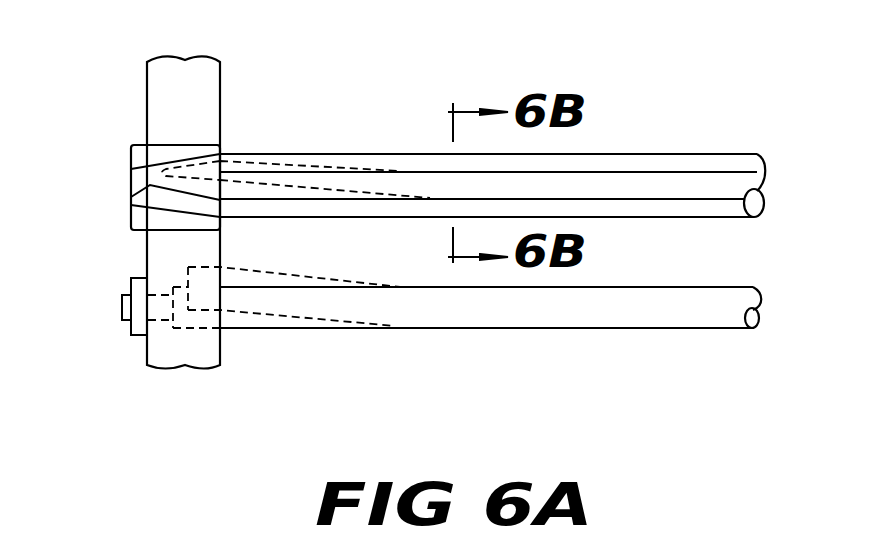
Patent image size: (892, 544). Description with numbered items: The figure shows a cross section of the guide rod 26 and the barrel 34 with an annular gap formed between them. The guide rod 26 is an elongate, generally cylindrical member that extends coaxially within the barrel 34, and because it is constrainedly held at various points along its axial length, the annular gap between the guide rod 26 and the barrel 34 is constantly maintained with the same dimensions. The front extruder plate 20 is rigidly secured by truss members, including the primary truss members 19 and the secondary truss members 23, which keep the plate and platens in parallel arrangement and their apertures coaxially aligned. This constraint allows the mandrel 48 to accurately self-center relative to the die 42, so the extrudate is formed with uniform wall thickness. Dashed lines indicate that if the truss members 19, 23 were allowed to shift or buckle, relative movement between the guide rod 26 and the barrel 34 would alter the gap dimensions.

The primary truss member 19 is at (318, 325).
The front extruder plate 20 is at (188, 78).
The secondary truss member 23 is at (557, 327).
The guide rod 26 is at (297, 165).
The barrel 34 is at (632, 153).
The die 42 is at (130, 144).
The mandrel 48 is at (131, 197).